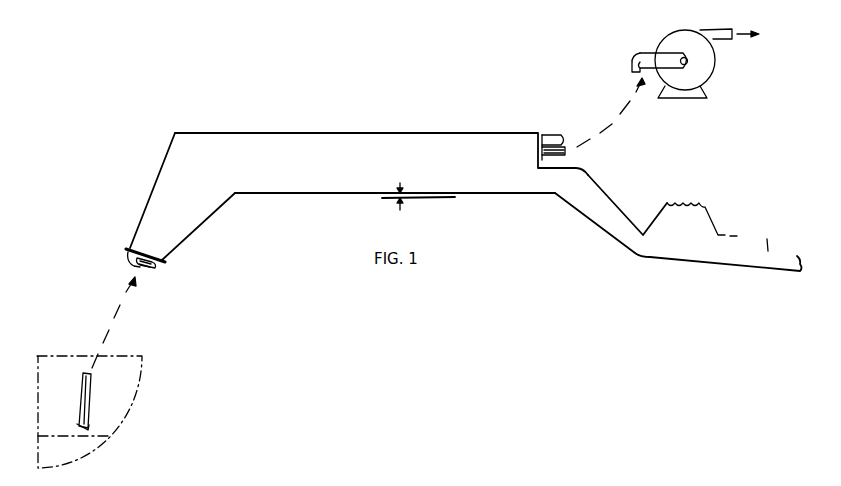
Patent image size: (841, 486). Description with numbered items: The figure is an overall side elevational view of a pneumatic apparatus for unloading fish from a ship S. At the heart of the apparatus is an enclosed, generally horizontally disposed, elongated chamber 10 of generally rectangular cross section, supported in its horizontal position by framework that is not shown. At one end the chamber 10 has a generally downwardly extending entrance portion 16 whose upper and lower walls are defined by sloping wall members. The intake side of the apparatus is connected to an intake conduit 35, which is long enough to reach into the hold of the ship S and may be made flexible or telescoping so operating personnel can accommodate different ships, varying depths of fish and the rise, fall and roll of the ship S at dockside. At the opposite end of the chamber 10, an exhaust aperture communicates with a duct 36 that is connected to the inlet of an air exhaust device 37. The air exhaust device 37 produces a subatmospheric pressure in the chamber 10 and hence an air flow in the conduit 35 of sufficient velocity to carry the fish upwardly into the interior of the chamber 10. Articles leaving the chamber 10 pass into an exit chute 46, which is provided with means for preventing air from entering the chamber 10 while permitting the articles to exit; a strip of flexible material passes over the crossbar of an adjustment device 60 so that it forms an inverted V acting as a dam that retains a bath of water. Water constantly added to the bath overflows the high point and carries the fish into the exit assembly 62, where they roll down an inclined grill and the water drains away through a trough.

The chamber 10 is at (393, 148).
The entrance portion 16 is at (203, 238).
The intake conduit 35 is at (153, 266).
The duct 36 is at (560, 138).
The air exhaust device 37 is at (715, 76).
The exit chute 46 is at (613, 194).
The adjustment device 60 is at (687, 206).
The exit assembly 62 is at (766, 231).
The ship S is at (134, 410).